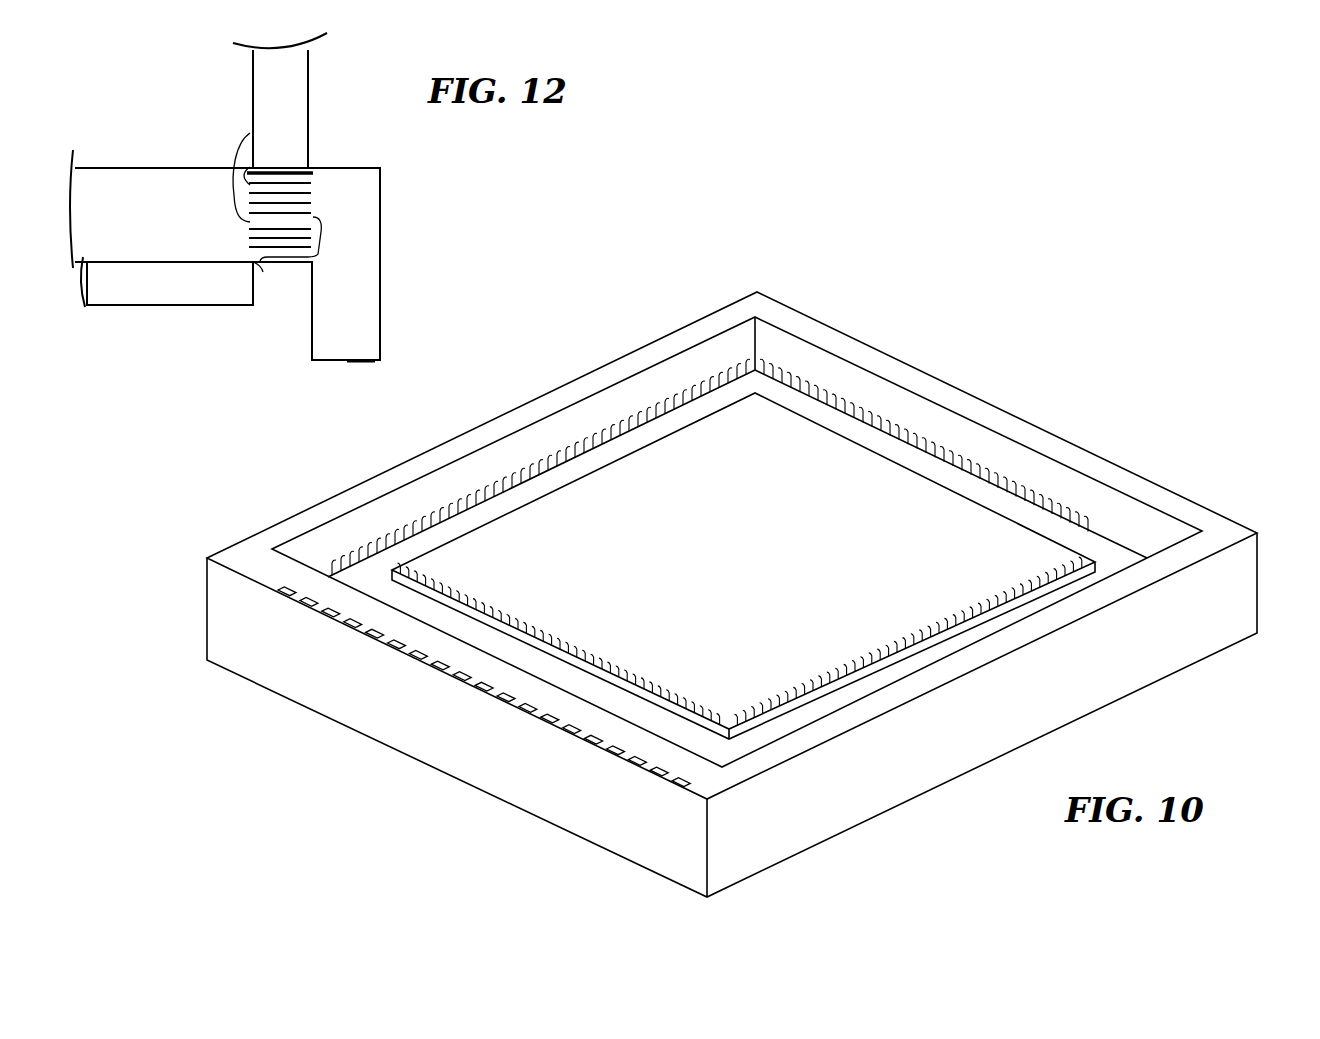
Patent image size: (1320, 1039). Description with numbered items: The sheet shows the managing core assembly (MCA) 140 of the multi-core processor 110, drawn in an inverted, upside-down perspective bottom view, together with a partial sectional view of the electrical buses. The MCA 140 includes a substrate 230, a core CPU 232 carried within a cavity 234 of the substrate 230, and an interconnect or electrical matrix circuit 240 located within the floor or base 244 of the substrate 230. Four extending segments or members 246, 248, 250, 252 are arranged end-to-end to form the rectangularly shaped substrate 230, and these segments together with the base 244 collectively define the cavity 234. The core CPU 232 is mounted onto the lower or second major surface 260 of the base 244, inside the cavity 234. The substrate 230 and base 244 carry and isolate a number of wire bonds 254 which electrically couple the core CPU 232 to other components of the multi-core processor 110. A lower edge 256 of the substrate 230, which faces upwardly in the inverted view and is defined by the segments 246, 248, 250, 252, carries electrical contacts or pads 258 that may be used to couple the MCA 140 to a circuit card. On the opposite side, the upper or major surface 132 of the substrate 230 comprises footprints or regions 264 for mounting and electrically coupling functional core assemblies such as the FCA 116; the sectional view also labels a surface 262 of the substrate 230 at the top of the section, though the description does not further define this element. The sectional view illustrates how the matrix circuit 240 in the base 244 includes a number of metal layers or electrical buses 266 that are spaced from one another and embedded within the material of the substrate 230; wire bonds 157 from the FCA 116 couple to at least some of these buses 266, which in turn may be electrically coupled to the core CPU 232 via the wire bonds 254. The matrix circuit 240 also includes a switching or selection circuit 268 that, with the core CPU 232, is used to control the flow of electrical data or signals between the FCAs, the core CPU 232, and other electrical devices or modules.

In FIG. 12, the multi-core processor 110 is at (450, 157).
In FIG. 12, the functional core assembly (FCA) 116 is at (312, 85).
In FIG. 10, the upper major surface 132 is at (983, 756).
In FIG. 12, the managing core assembly (MCA) 140 is at (340, 165).
In FIG. 10, the managing core assembly (MCA) 140 is at (943, 358).
In FIG. 12, the wire bonds 157 is at (250, 152).
In FIG. 10, the substrate 230 is at (1208, 523).
In FIG. 12, the core CPU 232 is at (190, 294).
In FIG. 10, the core CPU 232 is at (695, 562).
In FIG. 12, the cavity 234 is at (312, 348).
In FIG. 10, the cavity 234 is at (1015, 455).
In FIG. 10, the matrix circuit 240 is at (1107, 565).
In FIG. 12, the base 244 is at (212, 168).
In FIG. 10, the base 244 is at (1087, 583).
In FIG. 12, the extending segment 246 is at (363, 300).
In FIG. 10, the extending segment 246 is at (615, 372).
In FIG. 10, the extending segment 248 is at (1088, 465).
In FIG. 10, the extending segment 250 is at (820, 733).
In FIG. 10, the extending segment 252 is at (310, 580).
In FIG. 12, the wire bonds 254 is at (255, 278).
In FIG. 10, the wire bonds 254 is at (883, 420).
In FIG. 12, the lower edge 256 is at (337, 362).
In FIG. 10, the lower edge 256 is at (265, 540).
In FIG. 12, the electrical pads 258 is at (380, 363).
In FIG. 10, the electrical pads 258 is at (322, 606).
In FIG. 12, the second major surface 260 is at (293, 263).
In FIG. 10, the second major surface 260 is at (758, 380).
In FIG. 12, the upper surface 262 is at (148, 168).
In FIG. 12, the footprints 264 is at (313, 173).
In FIG. 12, the electrical buses 266 is at (240, 243).
In FIG. 12, the switching circuit 268 is at (228, 190).